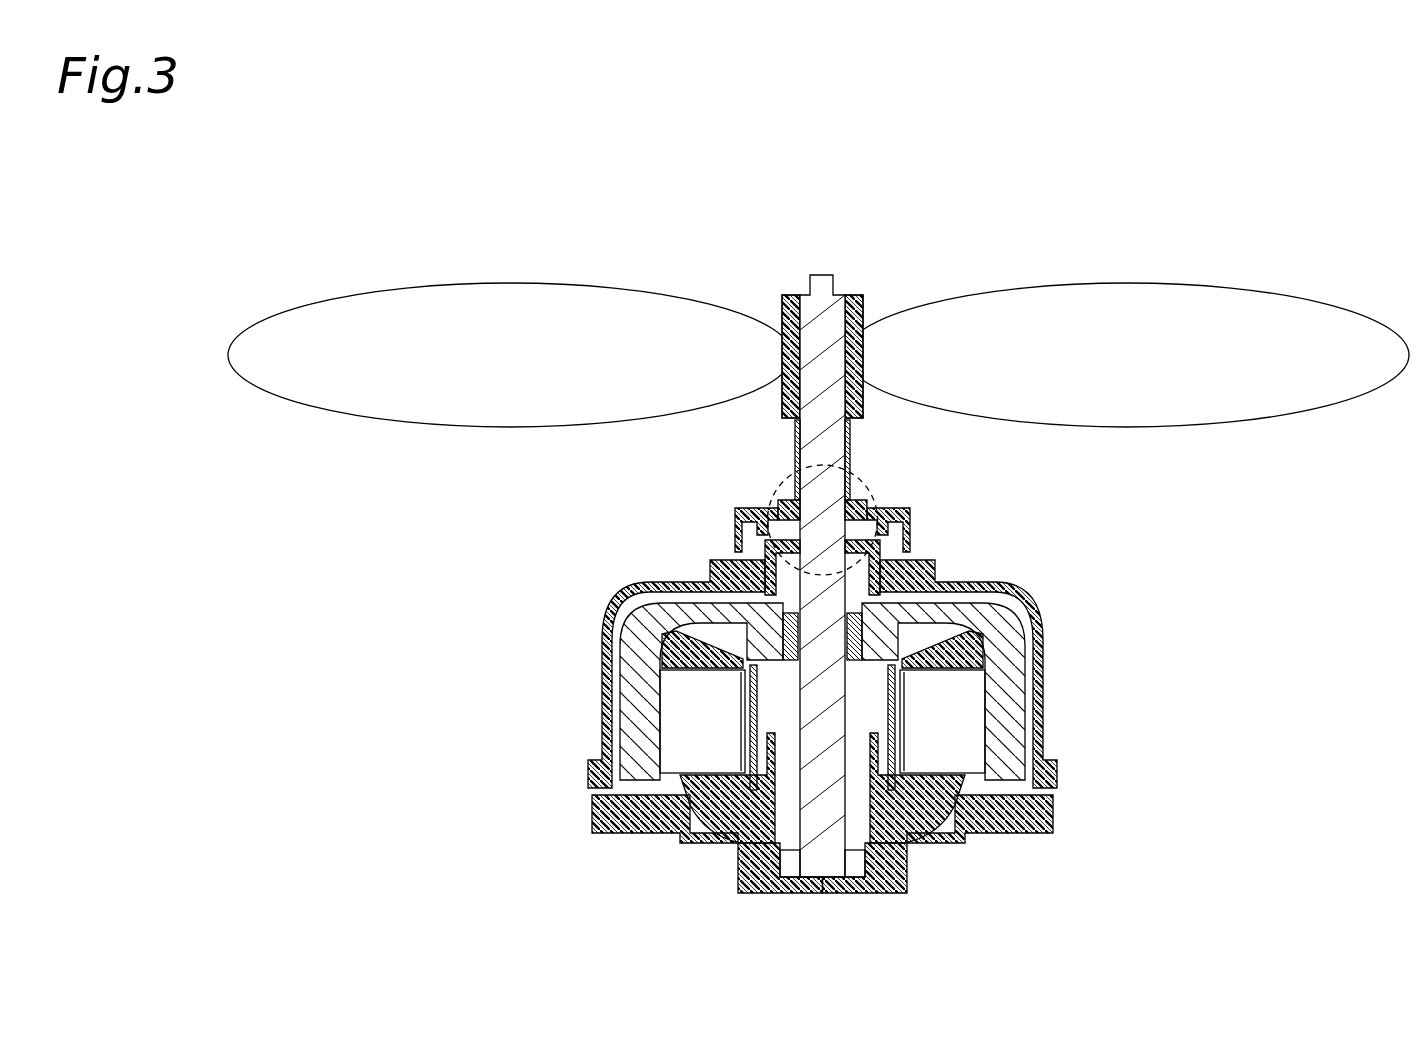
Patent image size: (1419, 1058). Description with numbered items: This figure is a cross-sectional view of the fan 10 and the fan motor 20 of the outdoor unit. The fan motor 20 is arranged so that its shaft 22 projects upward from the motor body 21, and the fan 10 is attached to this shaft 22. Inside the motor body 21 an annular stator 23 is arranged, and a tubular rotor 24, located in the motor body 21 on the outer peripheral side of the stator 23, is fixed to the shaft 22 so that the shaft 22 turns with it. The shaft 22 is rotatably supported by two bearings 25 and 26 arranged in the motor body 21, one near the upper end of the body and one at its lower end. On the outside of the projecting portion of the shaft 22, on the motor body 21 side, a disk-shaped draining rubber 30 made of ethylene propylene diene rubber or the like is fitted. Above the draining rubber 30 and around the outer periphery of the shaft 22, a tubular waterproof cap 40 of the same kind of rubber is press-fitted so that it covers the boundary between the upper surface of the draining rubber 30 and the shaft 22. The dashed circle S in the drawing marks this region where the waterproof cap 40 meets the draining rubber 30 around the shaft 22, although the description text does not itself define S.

The fan 10 is at (1198, 298).
The fan motor 20 is at (1065, 606).
The motor body 21 is at (1042, 692).
The shaft 22 is at (822, 278).
The stator 23 is at (958, 745).
The rotor 24 is at (1013, 727).
The bearing 25 is at (752, 552).
The bearing 26 is at (900, 893).
The draining rubber 30 is at (905, 518).
The waterproof cap 40 is at (795, 462).
The space S is at (877, 481).